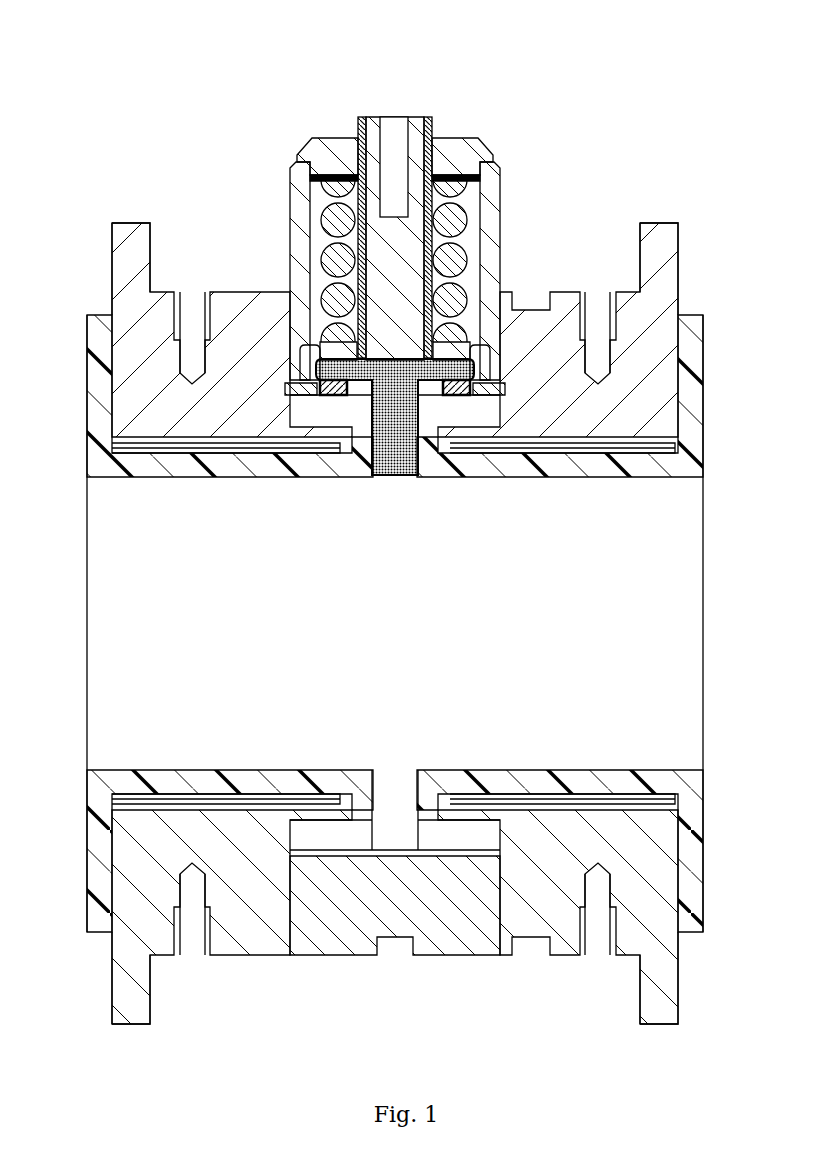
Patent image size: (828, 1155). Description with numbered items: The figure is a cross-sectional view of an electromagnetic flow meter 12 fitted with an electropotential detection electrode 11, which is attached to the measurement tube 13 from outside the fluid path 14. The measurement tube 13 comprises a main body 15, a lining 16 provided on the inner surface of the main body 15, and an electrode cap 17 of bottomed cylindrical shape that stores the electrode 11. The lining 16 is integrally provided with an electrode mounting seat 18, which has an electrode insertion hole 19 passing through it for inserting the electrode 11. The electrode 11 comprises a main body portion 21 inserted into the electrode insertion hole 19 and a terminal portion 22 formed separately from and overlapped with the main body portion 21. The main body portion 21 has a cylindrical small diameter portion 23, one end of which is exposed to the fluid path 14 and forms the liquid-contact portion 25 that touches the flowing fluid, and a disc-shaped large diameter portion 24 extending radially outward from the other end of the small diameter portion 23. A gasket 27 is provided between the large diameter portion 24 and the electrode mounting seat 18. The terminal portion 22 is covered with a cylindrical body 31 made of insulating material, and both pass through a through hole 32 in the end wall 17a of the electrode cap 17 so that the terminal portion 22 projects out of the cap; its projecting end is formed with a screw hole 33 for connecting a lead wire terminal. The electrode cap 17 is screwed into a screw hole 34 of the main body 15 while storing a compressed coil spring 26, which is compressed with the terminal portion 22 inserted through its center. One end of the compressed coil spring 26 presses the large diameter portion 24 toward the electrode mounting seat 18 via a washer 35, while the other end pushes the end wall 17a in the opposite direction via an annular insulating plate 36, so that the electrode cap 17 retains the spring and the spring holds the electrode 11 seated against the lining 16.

The electropotential detection electrode 11 is at (393, 480).
The electromagnetic flow meter 12 is at (100, 76).
The measurement tube 13 is at (128, 220).
The fluid path 14 is at (128, 580).
The main body 15 is at (112, 303).
The lining 16 is at (87, 369).
The electrode cap 17 is at (290, 187).
The end wall 17a is at (342, 143).
The electrode mounting seat 18 is at (298, 405).
The electrode insertion hole 19 is at (410, 478).
The main body portion 21 is at (393, 623).
The terminal portion 22 is at (428, 114).
The small diameter portion 23 is at (452, 445).
The large diameter portion 24 is at (468, 553).
The liquid-contact portion 25 is at (385, 478).
The compressed coil spring 26 is at (465, 212).
The gasket 27 is at (333, 397).
The cylindrical body 31 is at (497, 162).
The through hole 32 is at (300, 148).
The screw hole 33 is at (386, 132).
The screw hole 34 is at (297, 330).
The washer 35 is at (495, 370).
The annular insulating plate 36 is at (500, 200).